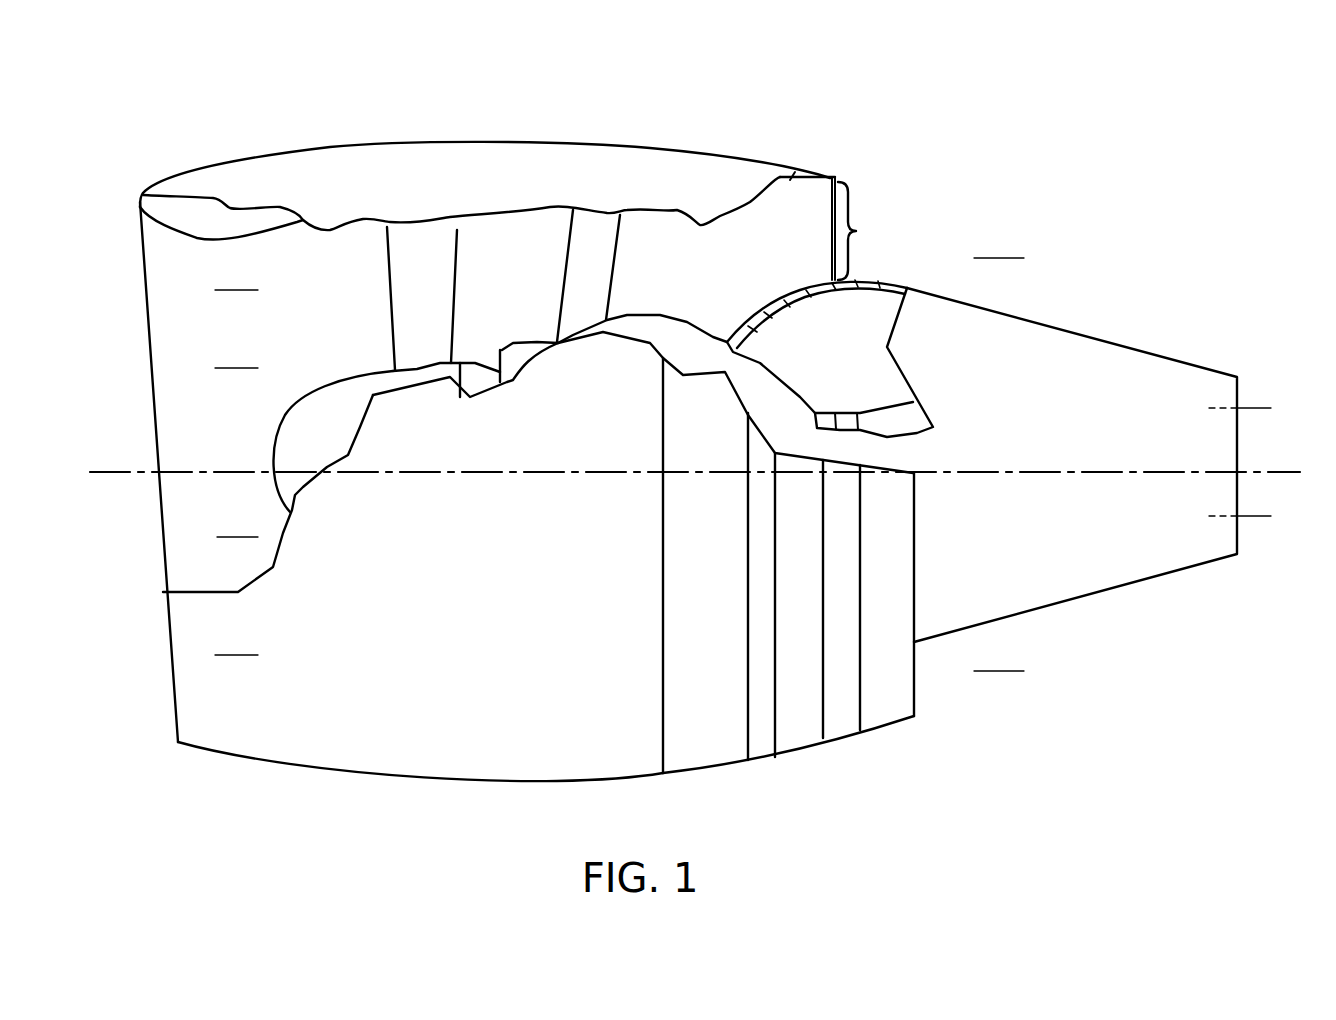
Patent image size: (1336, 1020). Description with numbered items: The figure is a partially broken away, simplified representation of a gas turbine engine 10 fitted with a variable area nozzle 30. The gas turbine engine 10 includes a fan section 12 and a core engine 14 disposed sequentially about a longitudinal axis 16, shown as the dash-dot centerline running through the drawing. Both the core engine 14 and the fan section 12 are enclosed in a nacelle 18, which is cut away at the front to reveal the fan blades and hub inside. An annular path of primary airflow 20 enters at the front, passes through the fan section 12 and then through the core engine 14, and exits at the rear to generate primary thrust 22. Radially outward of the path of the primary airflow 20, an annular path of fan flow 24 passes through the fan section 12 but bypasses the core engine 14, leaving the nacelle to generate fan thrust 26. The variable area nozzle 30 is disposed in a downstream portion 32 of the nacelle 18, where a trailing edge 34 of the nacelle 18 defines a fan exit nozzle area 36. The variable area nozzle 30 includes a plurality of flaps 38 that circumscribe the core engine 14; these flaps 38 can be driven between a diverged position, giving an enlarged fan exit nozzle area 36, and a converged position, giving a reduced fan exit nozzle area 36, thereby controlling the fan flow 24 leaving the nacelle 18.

The gas turbine engine 10 is at (1084, 124).
The fan section 12 is at (343, 340).
The core engine 14 is at (530, 330).
The longitudinal axis 16 is at (193, 478).
The nacelle 18 is at (549, 112).
The primary airflow 20 is at (268, 537).
The primary thrust 22 is at (1281, 516).
The fan flow 24 is at (268, 655).
The fan thrust 26 is at (1034, 671).
The variable area nozzle 30 is at (780, 177).
The downstream portion 32 is at (713, 139).
The trailing edge 34 is at (827, 177).
The fan exit nozzle area 36 is at (866, 231).
The flaps 38 is at (797, 173).